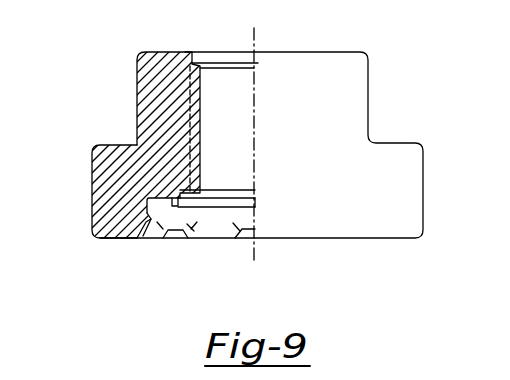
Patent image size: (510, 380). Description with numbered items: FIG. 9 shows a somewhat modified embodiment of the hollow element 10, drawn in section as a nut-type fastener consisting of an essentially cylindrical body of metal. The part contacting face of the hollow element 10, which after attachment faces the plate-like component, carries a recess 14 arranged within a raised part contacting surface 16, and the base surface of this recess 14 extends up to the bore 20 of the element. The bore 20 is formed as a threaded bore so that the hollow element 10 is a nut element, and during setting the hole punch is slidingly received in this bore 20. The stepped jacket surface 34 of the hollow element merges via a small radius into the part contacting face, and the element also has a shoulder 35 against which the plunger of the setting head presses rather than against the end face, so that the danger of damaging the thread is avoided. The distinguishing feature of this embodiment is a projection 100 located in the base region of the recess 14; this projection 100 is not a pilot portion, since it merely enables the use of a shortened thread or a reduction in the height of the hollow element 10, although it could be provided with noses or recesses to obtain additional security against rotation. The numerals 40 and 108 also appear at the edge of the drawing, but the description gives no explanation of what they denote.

The hollow element 10 is at (373, 96).
The recess 14 is at (218, 217).
The raised part contacting surface 16 is at (119, 240).
The bore 20 is at (255, 87).
The stepped jacket surface 34 is at (188, 92).
The shoulder 35 is at (117, 143).
The container neck 40 is at (502, 131).
The projection 100 is at (172, 196).
The container thread 108 is at (509, 178).